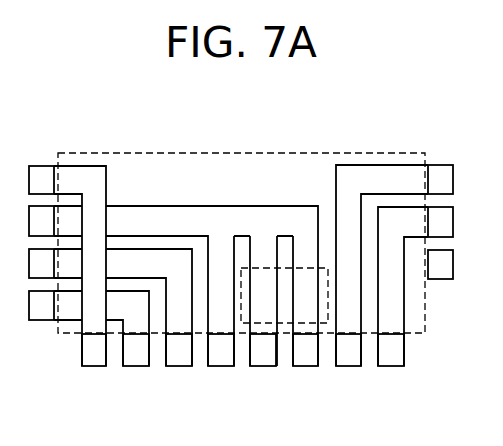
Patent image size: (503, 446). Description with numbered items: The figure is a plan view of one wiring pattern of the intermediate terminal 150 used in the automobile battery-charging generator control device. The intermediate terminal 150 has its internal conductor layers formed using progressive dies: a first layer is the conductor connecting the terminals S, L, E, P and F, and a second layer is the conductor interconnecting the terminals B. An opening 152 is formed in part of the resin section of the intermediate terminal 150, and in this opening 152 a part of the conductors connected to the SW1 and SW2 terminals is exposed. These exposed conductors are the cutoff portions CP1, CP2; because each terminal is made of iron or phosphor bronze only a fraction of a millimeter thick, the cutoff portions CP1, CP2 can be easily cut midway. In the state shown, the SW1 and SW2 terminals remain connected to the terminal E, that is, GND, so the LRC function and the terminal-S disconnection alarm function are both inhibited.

The intermediate terminal 150 is at (162, 153).
The opening 152 is at (323, 326).
The cutoff portion CP1 is at (303, 307).
The cutoff portion CP2 is at (256, 307).